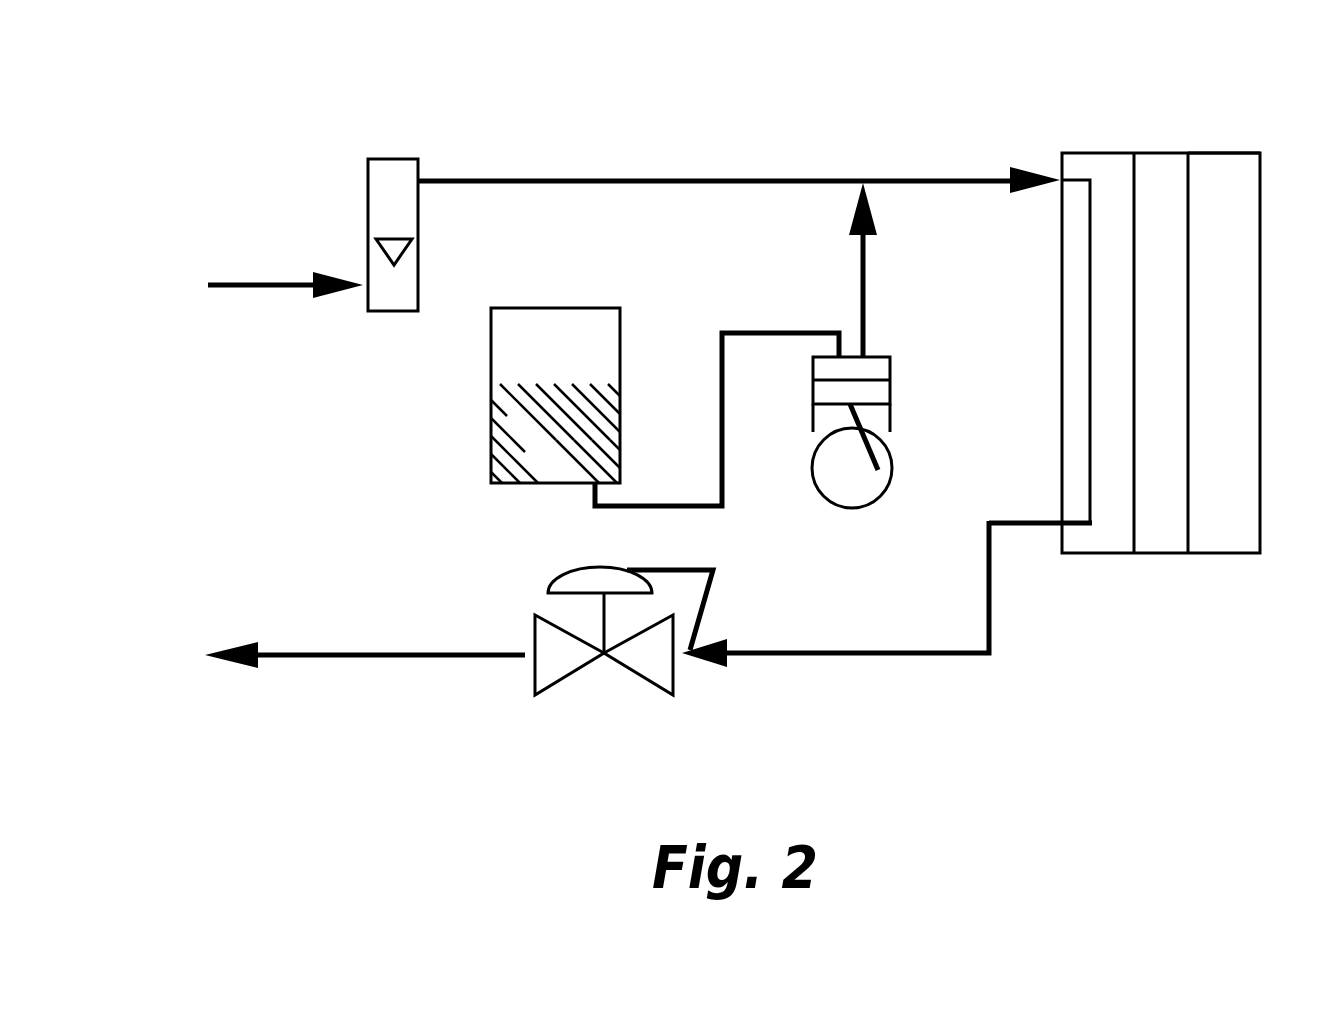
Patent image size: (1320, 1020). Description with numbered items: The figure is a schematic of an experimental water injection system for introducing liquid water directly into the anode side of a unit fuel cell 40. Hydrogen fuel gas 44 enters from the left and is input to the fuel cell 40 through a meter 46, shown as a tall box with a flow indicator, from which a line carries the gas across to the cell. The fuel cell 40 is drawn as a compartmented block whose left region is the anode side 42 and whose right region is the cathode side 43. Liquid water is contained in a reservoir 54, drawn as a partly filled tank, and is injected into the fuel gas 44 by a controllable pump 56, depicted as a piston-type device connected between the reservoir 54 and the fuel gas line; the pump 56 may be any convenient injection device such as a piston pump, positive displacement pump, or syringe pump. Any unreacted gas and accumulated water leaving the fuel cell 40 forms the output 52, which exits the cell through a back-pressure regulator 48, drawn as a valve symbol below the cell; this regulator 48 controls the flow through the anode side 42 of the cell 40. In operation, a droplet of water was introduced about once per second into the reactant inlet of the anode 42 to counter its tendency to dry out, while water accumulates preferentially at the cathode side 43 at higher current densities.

The unit fuel cell 40 is at (1176, 100).
The anode side 42 is at (1110, 163).
The cathode side 43 is at (1218, 163).
The fuel gas 44 is at (255, 285).
The meter 46 is at (398, 167).
The back-pressure regulator 48 is at (557, 653).
The output 52 is at (336, 658).
The reservoir 54 is at (525, 369).
The controllable pump 56 is at (880, 402).